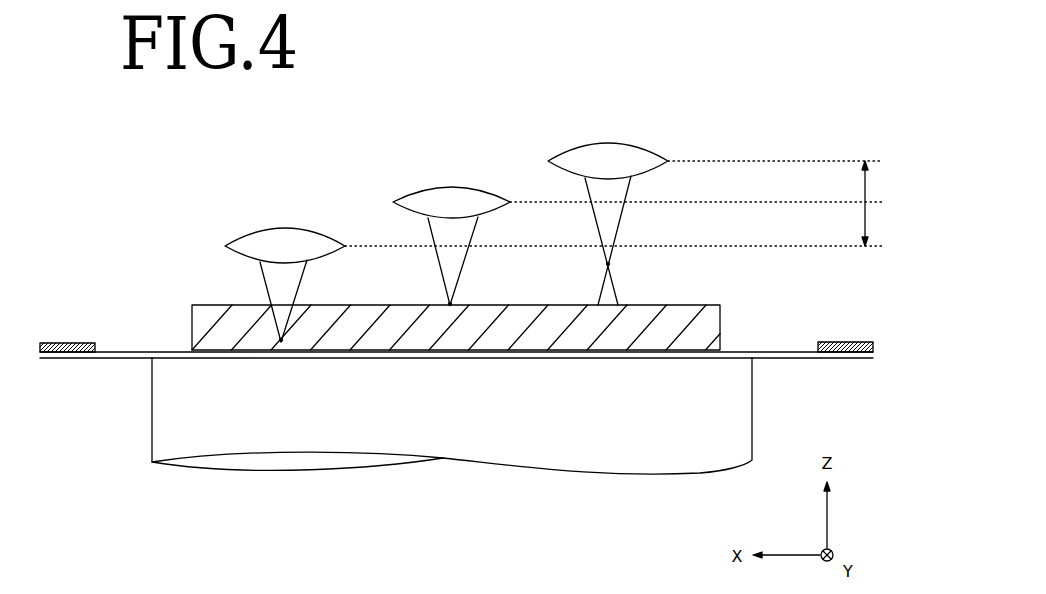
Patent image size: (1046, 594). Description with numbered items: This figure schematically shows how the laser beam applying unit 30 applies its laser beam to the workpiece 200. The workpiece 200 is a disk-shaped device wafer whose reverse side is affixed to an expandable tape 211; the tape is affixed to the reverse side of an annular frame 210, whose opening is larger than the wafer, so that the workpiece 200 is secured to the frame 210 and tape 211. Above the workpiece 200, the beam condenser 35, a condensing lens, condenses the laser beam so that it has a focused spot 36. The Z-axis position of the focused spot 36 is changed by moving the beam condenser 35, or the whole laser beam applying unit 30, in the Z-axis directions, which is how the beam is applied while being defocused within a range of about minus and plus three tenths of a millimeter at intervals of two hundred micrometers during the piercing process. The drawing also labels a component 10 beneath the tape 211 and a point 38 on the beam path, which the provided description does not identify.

The stage 10 is at (475, 437).
The workpiece 200 is at (190, 319).
The annular frame 210 is at (843, 341).
The expandable tape 211 is at (790, 360).
The laser beam applying unit 30 is at (297, 282).
The beam condenser 35 is at (258, 230).
The focused spot 36 is at (271, 340).
The irradiation spot 38 is at (435, 297).